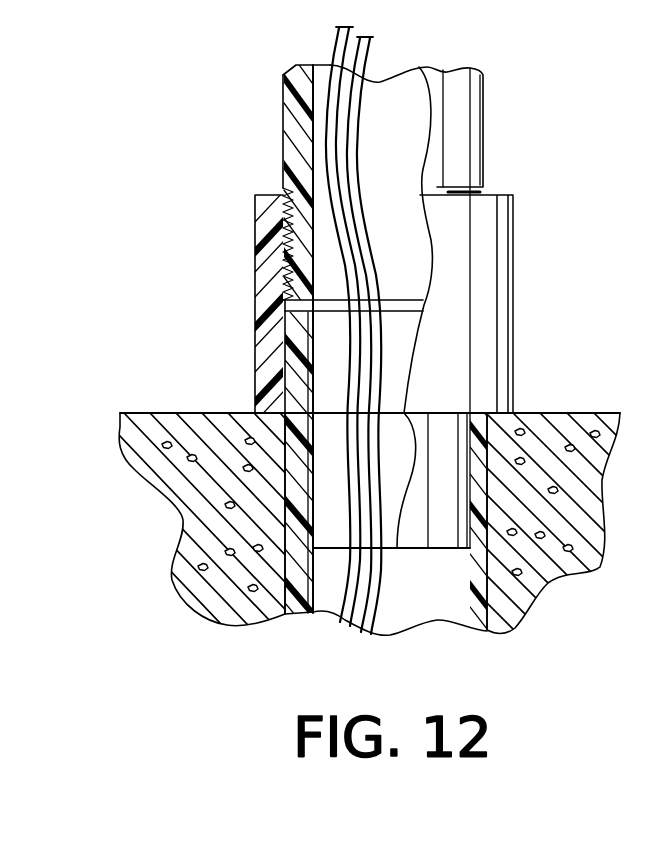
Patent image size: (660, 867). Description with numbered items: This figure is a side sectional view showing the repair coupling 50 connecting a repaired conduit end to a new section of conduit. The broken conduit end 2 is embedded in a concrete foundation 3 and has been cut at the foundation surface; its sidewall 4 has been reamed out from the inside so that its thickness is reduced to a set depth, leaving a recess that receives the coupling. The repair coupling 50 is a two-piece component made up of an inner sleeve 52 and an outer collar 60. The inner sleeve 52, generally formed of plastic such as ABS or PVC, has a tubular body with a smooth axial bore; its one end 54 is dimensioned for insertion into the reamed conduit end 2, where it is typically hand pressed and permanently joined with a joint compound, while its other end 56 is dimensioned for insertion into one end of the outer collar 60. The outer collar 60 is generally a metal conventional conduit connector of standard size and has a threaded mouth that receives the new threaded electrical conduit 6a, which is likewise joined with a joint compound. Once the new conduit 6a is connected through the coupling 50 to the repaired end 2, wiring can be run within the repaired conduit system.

The broken conduit end 2 is at (303, 625).
The concrete foundation 3 is at (157, 420).
The sidewall 4 is at (440, 621).
The threaded electrical conduit 6a is at (292, 150).
The repair coupling 50 is at (524, 311).
The inner sleeve 52 is at (280, 316).
The end of sleeve 54 is at (413, 527).
The other end of sleeve 56 is at (283, 362).
The outer collar 60 is at (270, 218).